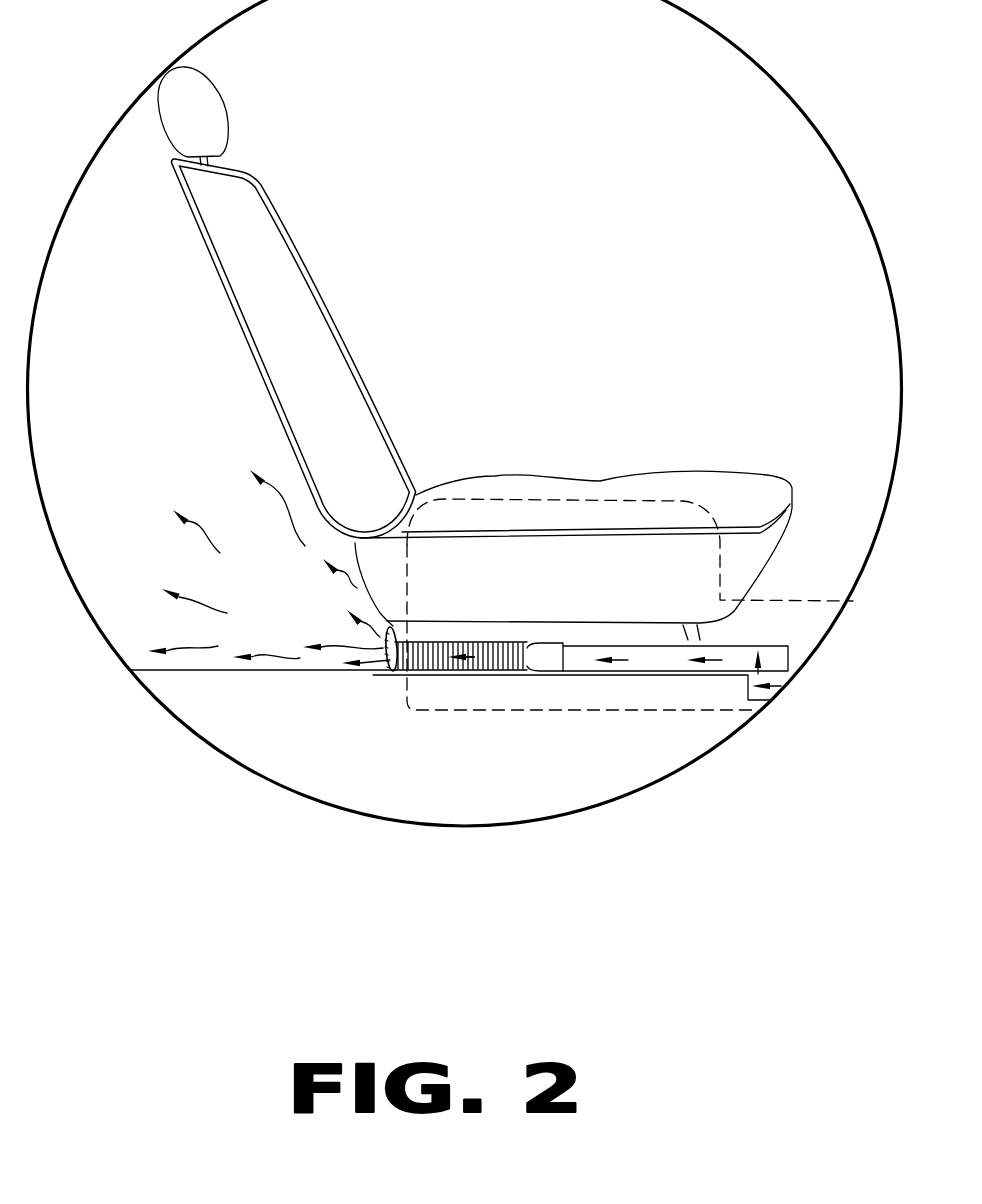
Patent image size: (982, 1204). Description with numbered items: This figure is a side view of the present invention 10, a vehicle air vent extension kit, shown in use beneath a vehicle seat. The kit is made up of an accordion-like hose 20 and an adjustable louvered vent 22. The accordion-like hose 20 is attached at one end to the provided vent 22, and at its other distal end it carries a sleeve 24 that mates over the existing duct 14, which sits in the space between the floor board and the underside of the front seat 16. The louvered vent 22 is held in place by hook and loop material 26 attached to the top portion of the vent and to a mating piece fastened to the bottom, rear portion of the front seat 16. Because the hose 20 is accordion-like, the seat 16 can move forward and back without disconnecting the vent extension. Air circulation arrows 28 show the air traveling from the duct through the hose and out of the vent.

The present invention 10 is at (505, 678).
The existing duct 14 is at (647, 640).
The front seat 16 is at (358, 368).
The accordion-like hose 20 is at (477, 646).
The adjustable louvered vent 22 is at (372, 675).
The sleeve 24 is at (553, 643).
The hook and loop material 26 is at (386, 627).
The air circulation arrows 28 is at (168, 650).